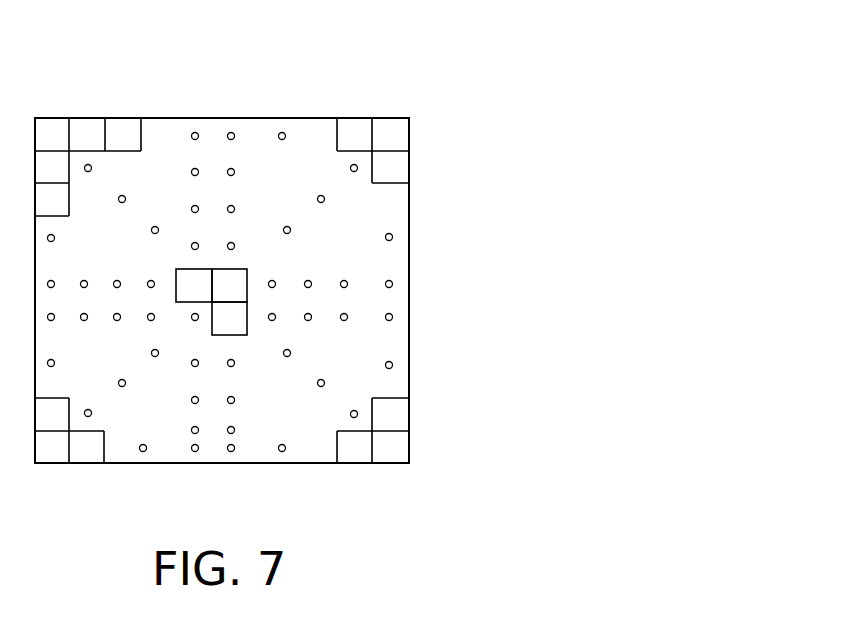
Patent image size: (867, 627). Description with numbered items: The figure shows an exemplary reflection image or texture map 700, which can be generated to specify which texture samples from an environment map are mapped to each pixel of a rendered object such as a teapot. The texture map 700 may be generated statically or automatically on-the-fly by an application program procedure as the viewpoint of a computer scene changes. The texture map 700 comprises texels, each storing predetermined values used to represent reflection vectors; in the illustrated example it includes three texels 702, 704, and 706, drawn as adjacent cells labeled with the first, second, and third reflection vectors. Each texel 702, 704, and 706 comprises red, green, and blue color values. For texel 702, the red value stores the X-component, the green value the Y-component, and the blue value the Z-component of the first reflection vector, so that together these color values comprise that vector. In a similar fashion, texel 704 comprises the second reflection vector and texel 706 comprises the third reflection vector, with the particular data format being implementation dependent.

The texture map 700 is at (440, 72).
The texel 702 is at (187, 268).
The texel 704 is at (235, 268).
The texel 706 is at (231, 335).